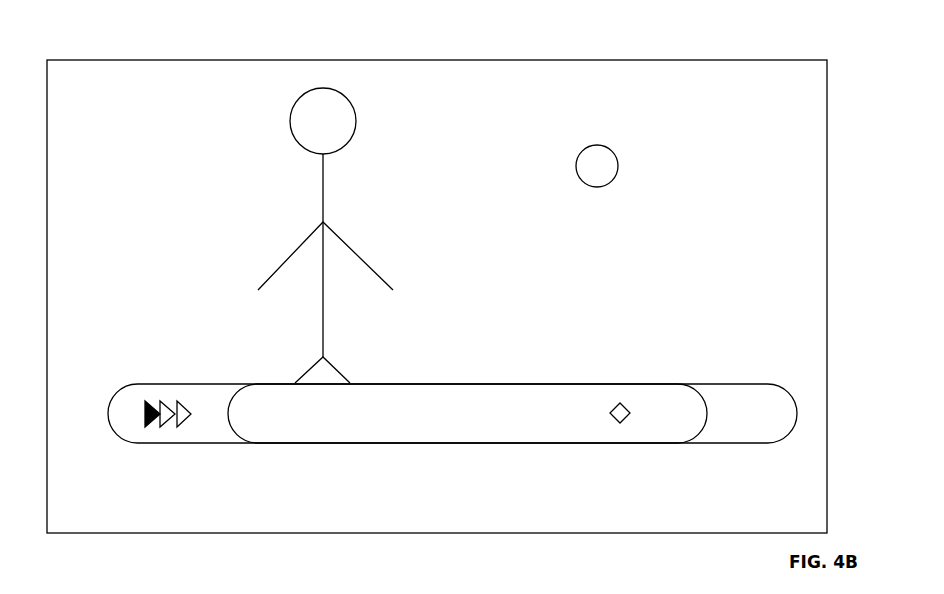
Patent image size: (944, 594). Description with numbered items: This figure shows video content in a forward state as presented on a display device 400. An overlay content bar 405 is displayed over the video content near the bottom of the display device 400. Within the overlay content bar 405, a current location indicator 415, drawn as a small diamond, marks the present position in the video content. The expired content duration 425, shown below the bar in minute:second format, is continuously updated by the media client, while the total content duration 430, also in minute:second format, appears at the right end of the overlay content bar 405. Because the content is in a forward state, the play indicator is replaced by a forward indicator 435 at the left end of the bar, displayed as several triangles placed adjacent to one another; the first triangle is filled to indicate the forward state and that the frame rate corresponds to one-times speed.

The display device 400 is at (387, 60).
The overlay content bar 405 is at (379, 443).
The current location indicator 415 is at (658, 372).
The expired content duration 425 is at (618, 473).
The total content duration 430 is at (793, 467).
The forward indicator 435 is at (150, 422).